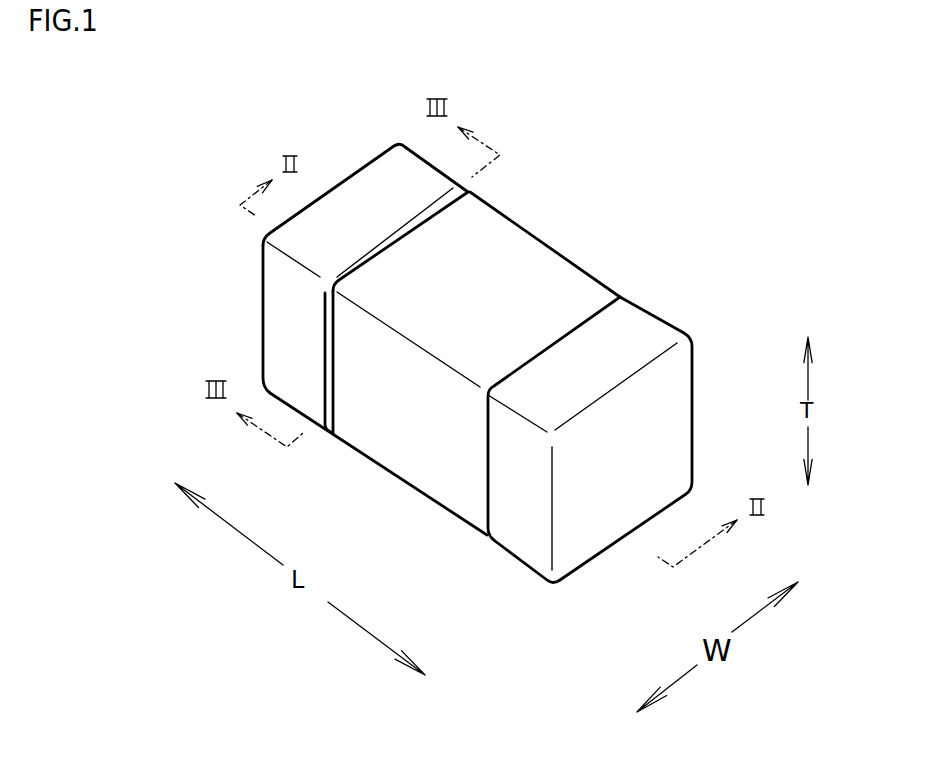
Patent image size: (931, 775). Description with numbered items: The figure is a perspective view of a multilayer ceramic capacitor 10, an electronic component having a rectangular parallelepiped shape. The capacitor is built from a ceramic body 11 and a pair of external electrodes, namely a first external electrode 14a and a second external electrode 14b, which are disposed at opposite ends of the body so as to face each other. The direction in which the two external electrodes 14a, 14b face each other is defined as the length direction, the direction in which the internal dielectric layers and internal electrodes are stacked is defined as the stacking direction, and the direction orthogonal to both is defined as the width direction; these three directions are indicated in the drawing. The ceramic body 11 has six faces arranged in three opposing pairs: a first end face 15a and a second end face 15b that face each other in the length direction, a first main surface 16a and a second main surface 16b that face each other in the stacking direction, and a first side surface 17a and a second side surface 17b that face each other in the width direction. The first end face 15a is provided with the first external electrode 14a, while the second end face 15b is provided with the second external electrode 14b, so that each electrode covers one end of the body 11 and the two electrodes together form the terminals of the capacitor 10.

The multilayer ceramic capacitor 10 is at (665, 153).
The ceramic body 11 is at (521, 256).
The first external electrode 14a is at (373, 182).
The second external electrode 14b is at (650, 323).
The first end face 15a is at (297, 312).
The second end face 15b is at (565, 504).
The first main surface 16a is at (570, 285).
The second main surface 16b is at (465, 494).
The first side surface 17a is at (417, 445).
The second side surface 17b is at (586, 297).